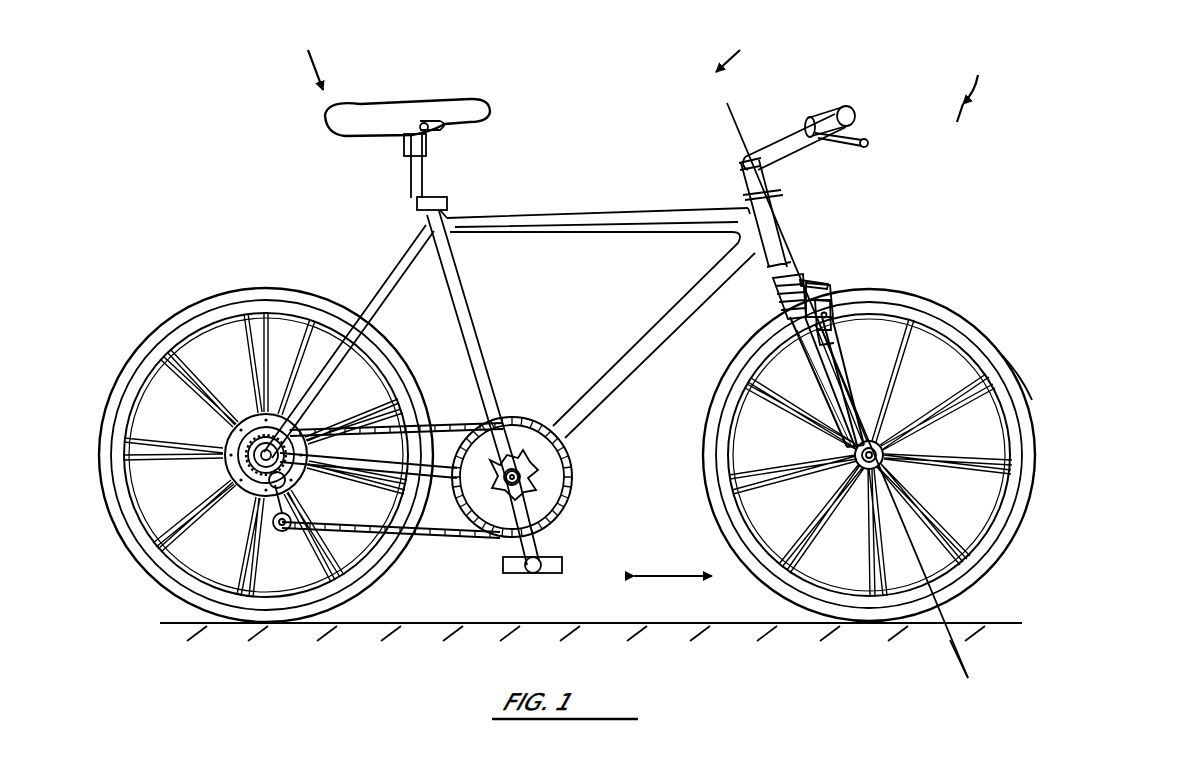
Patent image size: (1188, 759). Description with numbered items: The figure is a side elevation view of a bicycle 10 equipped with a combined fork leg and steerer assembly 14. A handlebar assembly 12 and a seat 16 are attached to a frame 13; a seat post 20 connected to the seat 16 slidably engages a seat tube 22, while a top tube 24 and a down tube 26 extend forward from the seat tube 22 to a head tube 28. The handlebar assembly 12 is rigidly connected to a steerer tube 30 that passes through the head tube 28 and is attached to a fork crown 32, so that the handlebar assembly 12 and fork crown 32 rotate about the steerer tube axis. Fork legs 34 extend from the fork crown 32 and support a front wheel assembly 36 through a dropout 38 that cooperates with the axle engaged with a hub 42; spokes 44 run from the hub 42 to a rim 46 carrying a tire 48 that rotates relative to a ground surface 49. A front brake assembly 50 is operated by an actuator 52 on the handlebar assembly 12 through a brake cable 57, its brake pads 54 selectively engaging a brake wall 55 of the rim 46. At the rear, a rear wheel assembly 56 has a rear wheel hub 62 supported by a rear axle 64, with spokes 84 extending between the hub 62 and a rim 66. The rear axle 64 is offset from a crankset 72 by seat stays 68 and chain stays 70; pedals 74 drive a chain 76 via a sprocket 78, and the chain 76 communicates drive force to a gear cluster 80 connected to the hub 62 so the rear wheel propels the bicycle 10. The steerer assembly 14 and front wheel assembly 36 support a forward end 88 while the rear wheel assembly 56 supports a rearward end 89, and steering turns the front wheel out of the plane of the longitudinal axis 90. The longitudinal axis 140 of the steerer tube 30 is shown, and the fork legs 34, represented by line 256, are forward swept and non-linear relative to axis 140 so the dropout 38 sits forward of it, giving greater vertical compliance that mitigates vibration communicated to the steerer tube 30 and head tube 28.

The bicycle 10 is at (740, 50).
The handlebar assembly 12 is at (782, 147).
The frame 13 is at (546, 318).
The fork or steerer assembly 14 is at (814, 395).
The seat 16 is at (440, 110).
The seat post 20 is at (428, 172).
The seat tube 22 is at (468, 324).
The top tube 24 is at (568, 242).
The down tube 26 is at (654, 336).
The head tube 28 is at (770, 221).
The stem or steerer tube 30 is at (759, 188).
The fork crown 32 is at (790, 276).
The fork leg 34 is at (774, 300).
The front wheel assembly 36 is at (933, 455).
The dropout 38 is at (844, 437).
The hub 42 is at (846, 472).
The spokes 44 is at (938, 550).
The rim 46 is at (1016, 425).
The tire 48 is at (996, 352).
The ground surface 49 is at (1003, 622).
The front brake assembly 50 is at (842, 284).
The actuator 52 is at (878, 122).
The brake pads 54 is at (878, 292).
The brake wall 55 is at (964, 340).
The rear wheel assembly 56 is at (239, 424).
The brake cable 57 is at (796, 255).
The rear wheel hub 62 is at (246, 460).
The rear axle 64 is at (241, 512).
The rim 66 is at (100, 490).
The seat stays 68 is at (398, 280).
The chain stays 70 is at (388, 465).
The crankset 72 is at (545, 405).
The pedals 74 is at (560, 556).
The chain 76 is at (460, 550).
The sprocket 78 is at (548, 472).
The gear cluster 80 is at (226, 441).
The spokes 84 is at (238, 376).
The forward end 88 is at (973, 84).
The rearward end 89 is at (307, 57).
The longitudinal axis 90 is at (675, 575).
The longitudinal axis of steerer tube 140 is at (728, 123).
The line representing fork leg length 256 is at (955, 668).